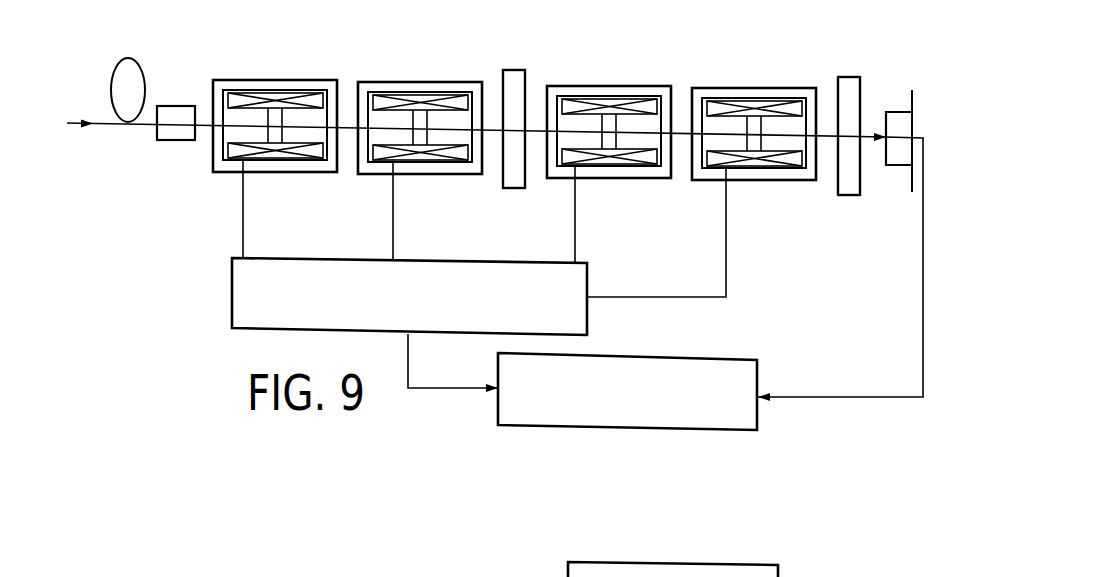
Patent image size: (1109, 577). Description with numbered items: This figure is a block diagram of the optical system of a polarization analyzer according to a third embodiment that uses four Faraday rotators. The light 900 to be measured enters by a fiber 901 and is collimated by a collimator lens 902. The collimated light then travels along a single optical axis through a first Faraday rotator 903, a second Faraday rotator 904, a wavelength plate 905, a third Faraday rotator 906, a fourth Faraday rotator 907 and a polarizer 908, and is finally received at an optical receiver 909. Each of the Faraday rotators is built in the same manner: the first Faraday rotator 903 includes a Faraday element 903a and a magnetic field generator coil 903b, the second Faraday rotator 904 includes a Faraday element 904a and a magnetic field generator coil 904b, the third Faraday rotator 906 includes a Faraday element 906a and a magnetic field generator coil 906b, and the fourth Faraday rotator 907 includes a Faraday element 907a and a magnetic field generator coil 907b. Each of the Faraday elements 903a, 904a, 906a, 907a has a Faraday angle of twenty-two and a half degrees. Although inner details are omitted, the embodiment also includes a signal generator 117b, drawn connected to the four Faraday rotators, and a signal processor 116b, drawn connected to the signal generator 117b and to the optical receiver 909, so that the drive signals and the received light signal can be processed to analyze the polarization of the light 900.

The light to be measured 900 is at (75, 118).
The fiber 901 is at (128, 58).
The collimator lens 902 is at (173, 106).
The first Faraday rotator 903 is at (257, 122).
The Faraday element 903a is at (262, 127).
The magnetic field generator coil 903b is at (273, 157).
The second Faraday rotator 904 is at (402, 125).
The Faraday element 904a is at (395, 158).
The magnetic field generator coil 904b is at (420, 183).
The wavelength plate 905 is at (515, 70).
The third Faraday rotator 906 is at (592, 126).
The Faraday element 906a is at (585, 161).
The magnetic field generator coil 906b is at (609, 186).
The fourth Faraday rotator 907 is at (736, 130).
The Faraday element 907a is at (729, 163).
The magnetic field generator coil 907b is at (754, 188).
The polarizer 908 is at (850, 77).
The optical receiver 909 is at (897, 112).
The signal generator 117b is at (231, 293).
The signal processor 116b is at (698, 355).